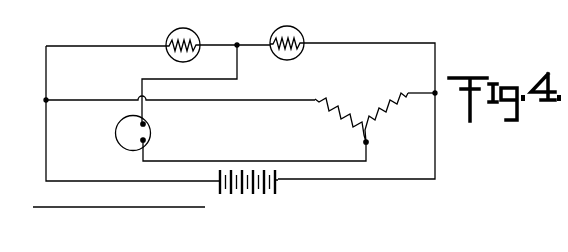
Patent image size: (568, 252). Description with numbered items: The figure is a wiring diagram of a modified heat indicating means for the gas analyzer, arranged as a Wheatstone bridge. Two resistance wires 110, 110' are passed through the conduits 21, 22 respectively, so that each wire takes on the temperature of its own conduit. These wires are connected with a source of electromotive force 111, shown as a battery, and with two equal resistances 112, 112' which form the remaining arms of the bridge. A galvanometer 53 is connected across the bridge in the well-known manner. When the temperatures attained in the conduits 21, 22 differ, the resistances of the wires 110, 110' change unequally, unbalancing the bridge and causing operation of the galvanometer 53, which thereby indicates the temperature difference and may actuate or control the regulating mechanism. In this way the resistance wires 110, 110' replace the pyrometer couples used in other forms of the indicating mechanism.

The conduit 21 is at (177, 29).
The conduit 22 is at (290, 26).
The resistance wire 110 is at (192, 26).
The resistance wire 110' is at (303, 27).
The galvanometer 53 is at (152, 126).
The source of electromotive force 111 is at (250, 168).
The resistance 112 is at (340, 108).
The resistance 112' is at (389, 105).